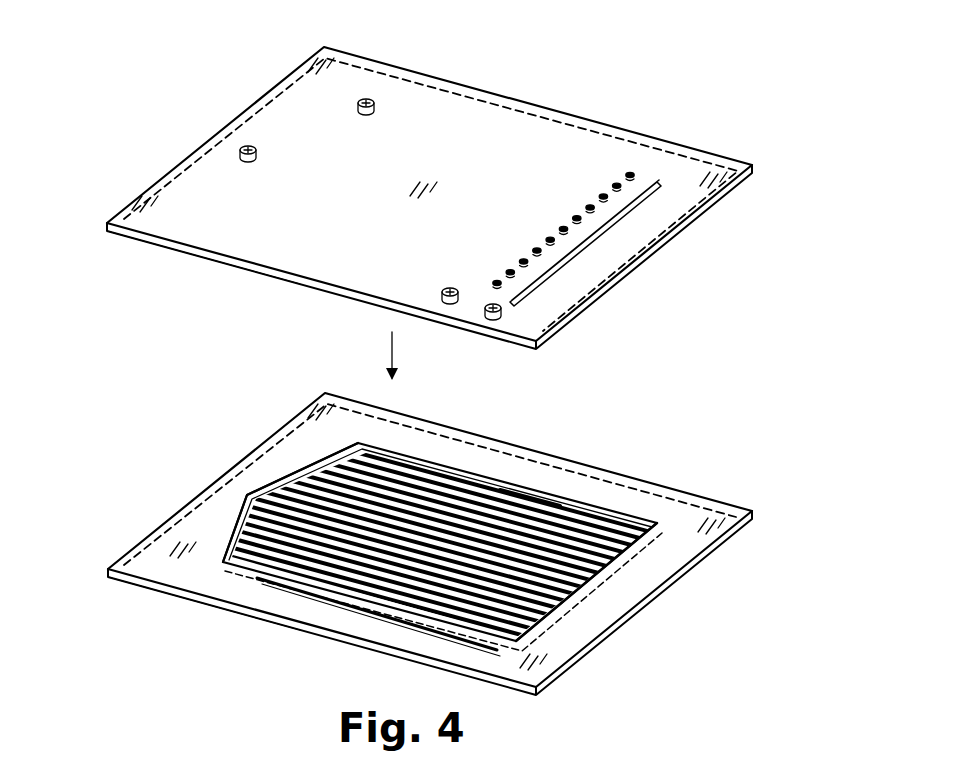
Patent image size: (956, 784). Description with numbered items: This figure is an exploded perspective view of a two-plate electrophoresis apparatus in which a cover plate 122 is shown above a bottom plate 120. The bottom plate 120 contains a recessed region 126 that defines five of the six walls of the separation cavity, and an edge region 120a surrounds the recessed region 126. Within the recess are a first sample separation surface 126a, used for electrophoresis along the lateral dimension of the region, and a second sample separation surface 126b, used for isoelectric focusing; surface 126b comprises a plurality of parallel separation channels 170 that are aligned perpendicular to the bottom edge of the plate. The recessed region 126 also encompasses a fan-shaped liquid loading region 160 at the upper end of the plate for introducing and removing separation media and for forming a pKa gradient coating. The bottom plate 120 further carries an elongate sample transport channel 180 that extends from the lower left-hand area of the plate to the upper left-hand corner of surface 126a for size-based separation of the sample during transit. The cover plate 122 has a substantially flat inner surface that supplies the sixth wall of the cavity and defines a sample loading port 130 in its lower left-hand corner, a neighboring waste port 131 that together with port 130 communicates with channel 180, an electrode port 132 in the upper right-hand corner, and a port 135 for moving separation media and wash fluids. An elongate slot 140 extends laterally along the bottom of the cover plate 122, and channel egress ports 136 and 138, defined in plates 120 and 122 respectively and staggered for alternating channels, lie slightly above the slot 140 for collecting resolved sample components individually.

The cover plate 122 is at (636, 60).
The bottom plate 120 is at (636, 374).
The edge region 120a is at (153, 232).
The electrode port 132 is at (366, 100).
The port 135 is at (248, 147).
The waste port 131 is at (450, 289).
The sample loading port 130 is at (493, 305).
The channel egress ports 138 is at (630, 172).
The elongate slot 140 is at (658, 183).
The recessed region 126 is at (430, 465).
The first sample separation surface 126a is at (356, 443).
The second sample separation surface 126b is at (374, 454).
The liquid loading region 160 is at (268, 500).
The separation channels 170 is at (530, 500).
The channel egress ports 136 is at (628, 517).
The elongate sample transport channel 180 is at (356, 598).